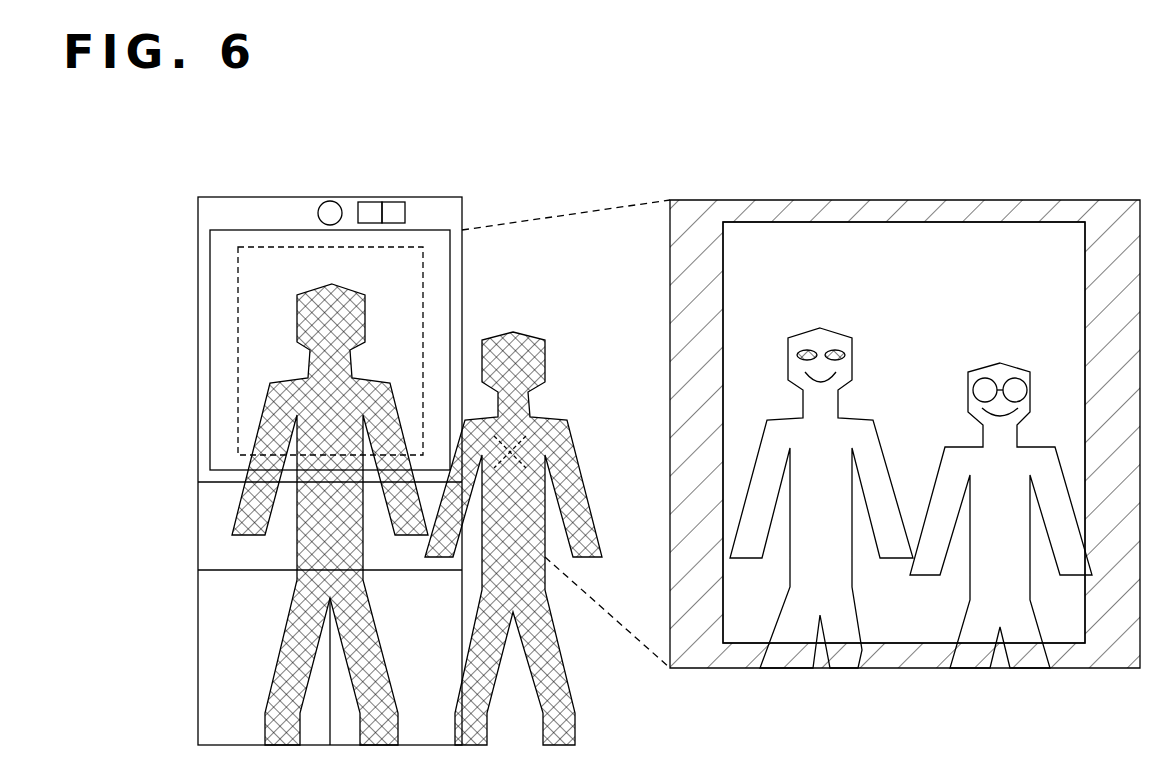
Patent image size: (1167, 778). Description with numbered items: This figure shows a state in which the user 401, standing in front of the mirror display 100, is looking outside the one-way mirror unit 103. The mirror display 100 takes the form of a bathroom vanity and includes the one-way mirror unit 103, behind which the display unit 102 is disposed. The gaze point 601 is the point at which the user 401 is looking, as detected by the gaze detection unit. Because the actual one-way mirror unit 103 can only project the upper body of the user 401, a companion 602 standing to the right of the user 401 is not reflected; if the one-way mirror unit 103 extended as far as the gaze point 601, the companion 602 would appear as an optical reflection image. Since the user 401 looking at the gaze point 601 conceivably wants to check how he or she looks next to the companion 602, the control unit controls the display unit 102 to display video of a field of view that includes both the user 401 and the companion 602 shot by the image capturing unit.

The mirror display 100 is at (226, 197).
The display unit 102 is at (983, 220).
The one-way mirror unit 103 is at (1088, 200).
The user 401 is at (361, 290).
The gaze point 601 is at (513, 450).
The companion 602 is at (523, 332).